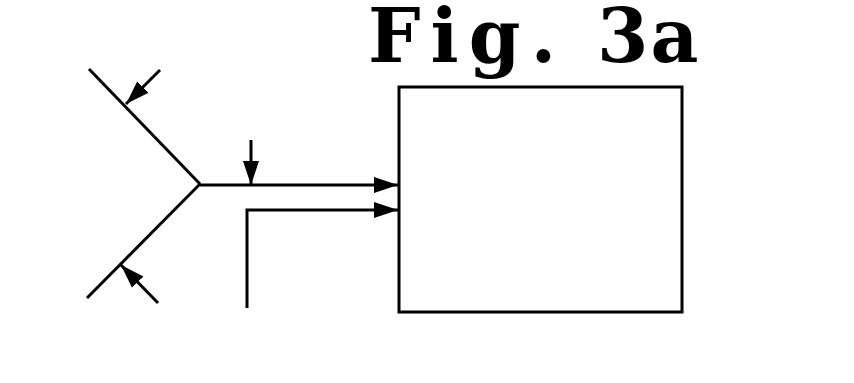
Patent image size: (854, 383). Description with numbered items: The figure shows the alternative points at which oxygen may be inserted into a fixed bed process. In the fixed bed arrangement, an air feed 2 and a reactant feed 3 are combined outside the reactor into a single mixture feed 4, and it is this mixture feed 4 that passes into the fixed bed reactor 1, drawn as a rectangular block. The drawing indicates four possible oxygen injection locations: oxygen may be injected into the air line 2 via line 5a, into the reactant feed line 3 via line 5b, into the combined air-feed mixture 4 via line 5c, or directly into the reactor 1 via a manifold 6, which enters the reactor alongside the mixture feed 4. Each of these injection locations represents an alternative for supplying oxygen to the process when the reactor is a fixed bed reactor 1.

The fixed bed reactor 1 is at (682, 117).
The air feed 2 is at (133, 117).
The reactant feed 3 is at (133, 256).
The mixture feed 4 is at (222, 188).
The oxygen injection line 5a is at (161, 77).
The oxygen injection line 5b is at (161, 299).
The oxygen injection line 5c is at (255, 150).
The manifold 6 is at (248, 258).